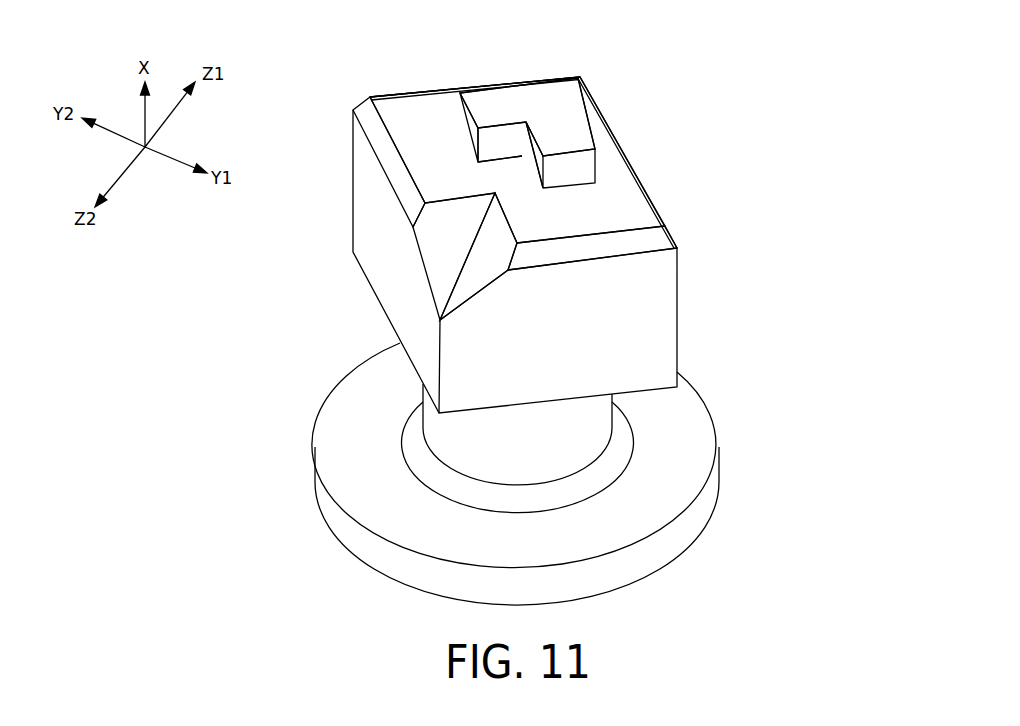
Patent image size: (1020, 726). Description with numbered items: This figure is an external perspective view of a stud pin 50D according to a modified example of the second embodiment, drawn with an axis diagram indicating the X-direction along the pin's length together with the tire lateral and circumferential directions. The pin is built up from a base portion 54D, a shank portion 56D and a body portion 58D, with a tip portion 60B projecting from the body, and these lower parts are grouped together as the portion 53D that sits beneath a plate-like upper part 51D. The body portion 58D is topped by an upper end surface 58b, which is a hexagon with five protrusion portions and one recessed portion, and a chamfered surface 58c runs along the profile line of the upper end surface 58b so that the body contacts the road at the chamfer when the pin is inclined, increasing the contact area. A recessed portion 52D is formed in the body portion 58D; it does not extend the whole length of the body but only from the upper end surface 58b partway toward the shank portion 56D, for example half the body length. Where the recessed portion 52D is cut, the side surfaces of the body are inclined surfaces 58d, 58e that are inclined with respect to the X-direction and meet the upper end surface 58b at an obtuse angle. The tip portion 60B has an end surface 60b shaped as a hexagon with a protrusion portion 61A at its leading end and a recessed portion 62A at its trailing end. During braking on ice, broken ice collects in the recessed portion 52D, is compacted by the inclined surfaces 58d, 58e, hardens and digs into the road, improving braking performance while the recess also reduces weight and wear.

The stud pin 50D is at (807, 74).
The top plate 51D is at (590, 63).
The recessed portion 52D is at (518, 208).
The support portion 53D is at (587, 460).
The base plate 54D is at (549, 474).
The shank portion 56D is at (602, 408).
The body portion 58D is at (636, 330).
The upper end surface 58b is at (627, 210).
The chamfered surface 58c is at (627, 245).
The inclined surface 58d is at (422, 230).
The inclined surface 58e is at (475, 287).
The tip portion 60B is at (474, 90).
The end surface 60b is at (563, 133).
The protrusion portion 61A is at (563, 68).
The recessed portion 62A is at (504, 132).